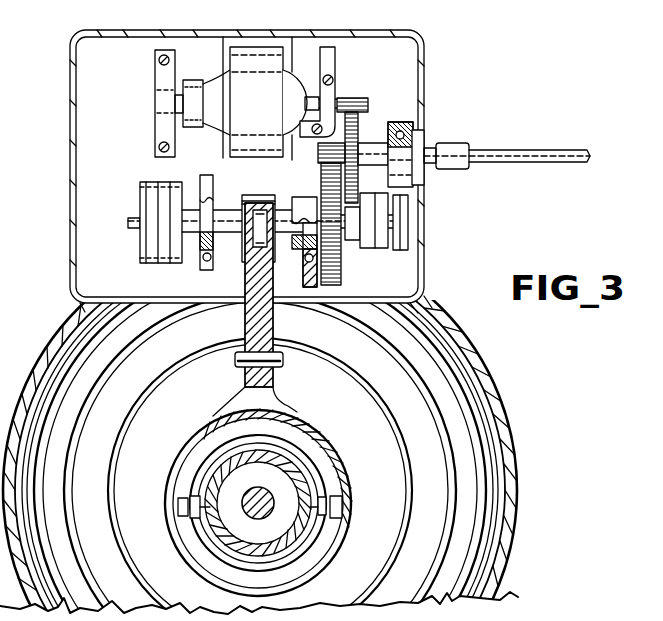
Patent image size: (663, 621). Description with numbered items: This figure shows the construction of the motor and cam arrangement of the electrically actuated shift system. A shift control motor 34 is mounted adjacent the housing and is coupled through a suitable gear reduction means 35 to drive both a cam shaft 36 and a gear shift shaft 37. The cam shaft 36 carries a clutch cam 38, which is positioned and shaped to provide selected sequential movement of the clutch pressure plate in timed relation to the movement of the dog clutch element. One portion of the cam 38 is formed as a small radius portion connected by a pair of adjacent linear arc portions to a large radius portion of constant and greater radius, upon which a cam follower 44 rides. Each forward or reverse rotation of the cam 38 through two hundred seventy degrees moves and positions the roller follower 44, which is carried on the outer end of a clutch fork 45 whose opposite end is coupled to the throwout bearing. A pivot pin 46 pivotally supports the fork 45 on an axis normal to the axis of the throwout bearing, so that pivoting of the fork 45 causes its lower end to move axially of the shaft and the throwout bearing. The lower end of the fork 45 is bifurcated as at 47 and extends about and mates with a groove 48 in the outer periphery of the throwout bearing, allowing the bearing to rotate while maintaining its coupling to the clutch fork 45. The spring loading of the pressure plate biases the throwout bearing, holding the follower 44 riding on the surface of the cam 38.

The shift control motor 34 is at (298, 44).
The gear reduction means 35 is at (384, 99).
The cam shaft 36 is at (294, 230).
The gear shift shaft 37 is at (433, 148).
The clutch cam 38 is at (254, 196).
The cam follower 44 is at (251, 238).
The clutch fork 45 is at (250, 325).
The pivot pin 46 is at (279, 358).
The bifurcated lower end 47 is at (336, 462).
The groove 48 is at (308, 540).